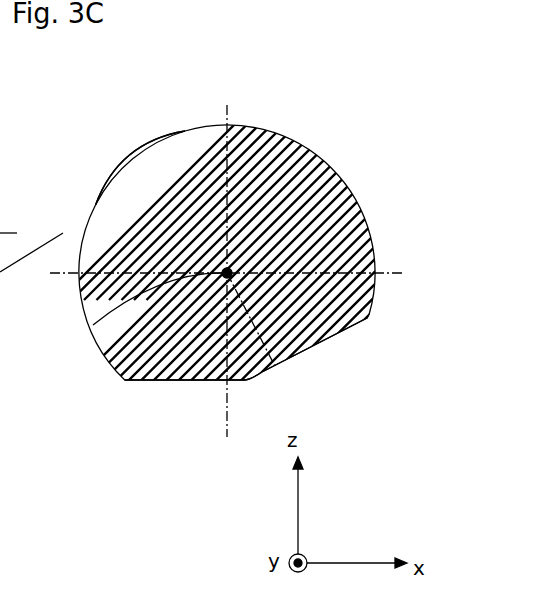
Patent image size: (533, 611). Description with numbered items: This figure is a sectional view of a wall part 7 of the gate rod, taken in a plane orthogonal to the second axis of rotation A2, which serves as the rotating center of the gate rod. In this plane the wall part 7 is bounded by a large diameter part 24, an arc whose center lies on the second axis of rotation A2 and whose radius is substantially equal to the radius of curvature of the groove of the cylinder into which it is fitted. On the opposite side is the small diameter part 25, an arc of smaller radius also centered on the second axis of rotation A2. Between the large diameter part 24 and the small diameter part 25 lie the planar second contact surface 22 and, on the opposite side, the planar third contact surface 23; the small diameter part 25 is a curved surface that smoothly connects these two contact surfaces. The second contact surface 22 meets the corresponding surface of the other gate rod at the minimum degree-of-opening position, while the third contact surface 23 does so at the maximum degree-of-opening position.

The wall part 7 is at (263, 128).
The second contact surface 22 is at (333, 340).
The third contact surface 23 is at (160, 382).
The large diameter part 24 is at (178, 135).
The small diameter part 25 is at (247, 382).
The second axis of rotation A2 is at (93, 325).